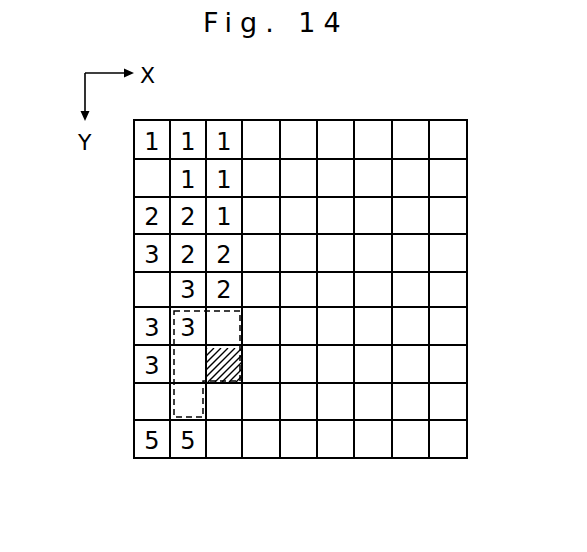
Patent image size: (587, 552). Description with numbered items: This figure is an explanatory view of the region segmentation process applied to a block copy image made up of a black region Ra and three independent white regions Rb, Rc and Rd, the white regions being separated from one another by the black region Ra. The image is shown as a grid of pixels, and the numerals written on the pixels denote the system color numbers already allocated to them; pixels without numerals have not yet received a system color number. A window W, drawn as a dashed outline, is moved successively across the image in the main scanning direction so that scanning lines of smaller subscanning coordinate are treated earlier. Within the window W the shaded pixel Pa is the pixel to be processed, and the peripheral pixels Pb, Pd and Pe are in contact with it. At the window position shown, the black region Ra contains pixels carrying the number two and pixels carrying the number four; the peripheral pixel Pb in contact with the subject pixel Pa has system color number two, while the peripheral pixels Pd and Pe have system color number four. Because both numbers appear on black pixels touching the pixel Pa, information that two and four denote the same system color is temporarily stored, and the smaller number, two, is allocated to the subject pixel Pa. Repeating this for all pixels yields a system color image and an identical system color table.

The black region Ra is at (142, 176).
The white region Rb is at (408, 130).
The white region Rc is at (142, 280).
The white region Rd is at (268, 448).
The window W is at (174, 311).
The pixel-to-be-processed Pa is at (231, 381).
The peripheral pixel Pb is at (233, 332).
The peripheral pixel Pd is at (172, 355).
The peripheral pixel Pe is at (179, 418).